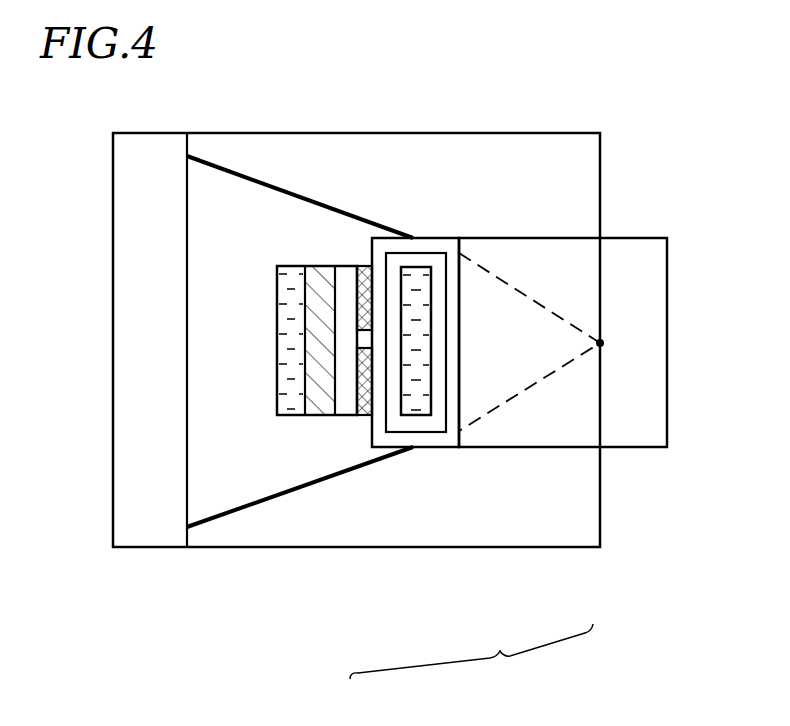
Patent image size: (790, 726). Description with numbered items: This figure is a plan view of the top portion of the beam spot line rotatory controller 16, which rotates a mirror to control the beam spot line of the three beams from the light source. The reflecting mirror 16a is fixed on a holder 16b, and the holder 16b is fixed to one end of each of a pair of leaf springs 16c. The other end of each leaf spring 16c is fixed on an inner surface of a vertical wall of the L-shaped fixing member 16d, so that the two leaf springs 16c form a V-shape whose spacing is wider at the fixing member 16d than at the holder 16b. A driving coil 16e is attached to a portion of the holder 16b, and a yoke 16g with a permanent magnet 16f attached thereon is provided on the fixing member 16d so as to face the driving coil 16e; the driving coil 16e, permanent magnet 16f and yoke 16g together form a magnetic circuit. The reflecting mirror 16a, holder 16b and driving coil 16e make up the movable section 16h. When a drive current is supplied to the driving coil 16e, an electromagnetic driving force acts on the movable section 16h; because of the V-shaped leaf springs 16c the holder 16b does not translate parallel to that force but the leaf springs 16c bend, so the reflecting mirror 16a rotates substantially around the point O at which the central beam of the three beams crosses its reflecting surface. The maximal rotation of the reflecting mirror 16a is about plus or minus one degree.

The beam spot line rotatory controller 16 is at (531, 91).
The reflecting mirror 16a is at (577, 435).
The holder 16b is at (440, 438).
The leaf springs 16c is at (240, 177).
The fixing member 16d is at (242, 145).
The driving coil 16e is at (360, 422).
The permanent magnet 16f is at (320, 407).
The yoke 16g is at (290, 283).
The movable section 16h is at (471, 661).
The point O is at (605, 335).